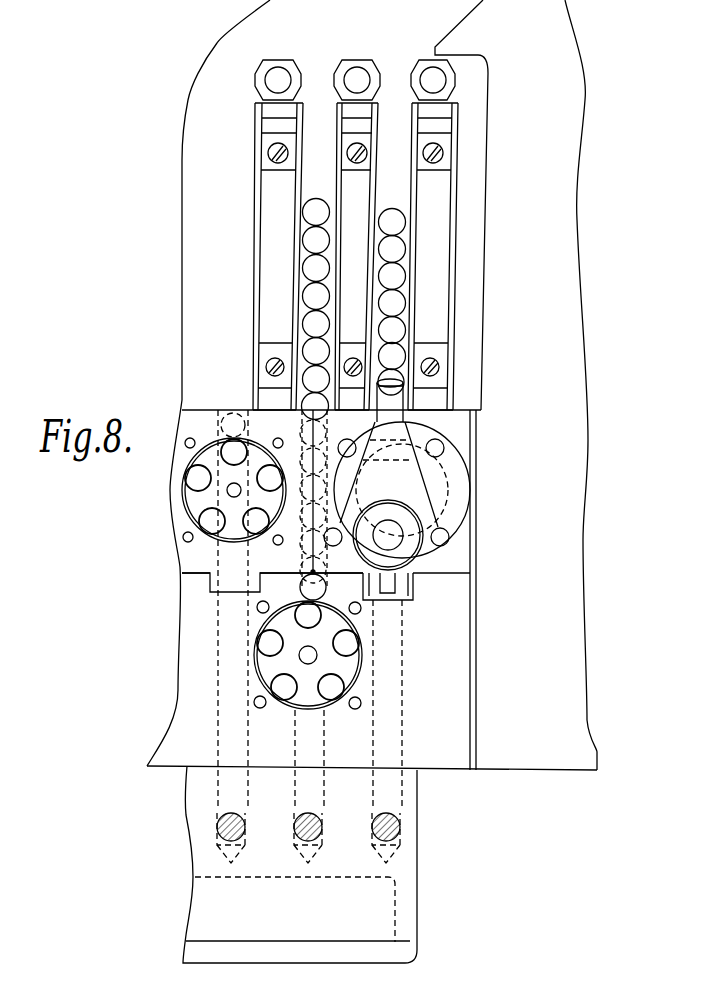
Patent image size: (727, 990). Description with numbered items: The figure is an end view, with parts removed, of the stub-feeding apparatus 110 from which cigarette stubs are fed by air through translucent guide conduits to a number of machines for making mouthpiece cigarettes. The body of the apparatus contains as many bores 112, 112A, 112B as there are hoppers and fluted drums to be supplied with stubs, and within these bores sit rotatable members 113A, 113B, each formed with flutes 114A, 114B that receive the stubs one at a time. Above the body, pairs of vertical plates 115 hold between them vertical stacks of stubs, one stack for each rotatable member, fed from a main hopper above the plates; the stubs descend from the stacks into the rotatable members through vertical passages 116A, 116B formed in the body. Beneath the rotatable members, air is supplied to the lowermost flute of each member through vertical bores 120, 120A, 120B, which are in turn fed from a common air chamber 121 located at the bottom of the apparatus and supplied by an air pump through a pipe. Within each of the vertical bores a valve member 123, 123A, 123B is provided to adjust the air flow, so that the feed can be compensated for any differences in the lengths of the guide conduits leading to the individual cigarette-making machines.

The stub-feeding apparatus 110 is at (545, 512).
The bore 112 is at (470, 473).
The bore 112A is at (363, 642).
The bore 112B is at (187, 515).
The rotatable member 113A is at (347, 668).
The rotatable member 113B is at (196, 503).
The flute 114A is at (341, 688).
The flute 114B is at (257, 523).
The vertical plates 115 is at (412, 190).
The vertical passage 116A is at (298, 588).
The vertical passage 116B is at (229, 409).
The vertical bore 120 is at (390, 793).
The vertical bore 120A is at (311, 777).
The vertical bore 120B is at (217, 785).
The common air chamber 121 is at (377, 918).
The valve member 123 is at (398, 830).
The valve member 123A is at (321, 831).
The valve member 123B is at (220, 833).